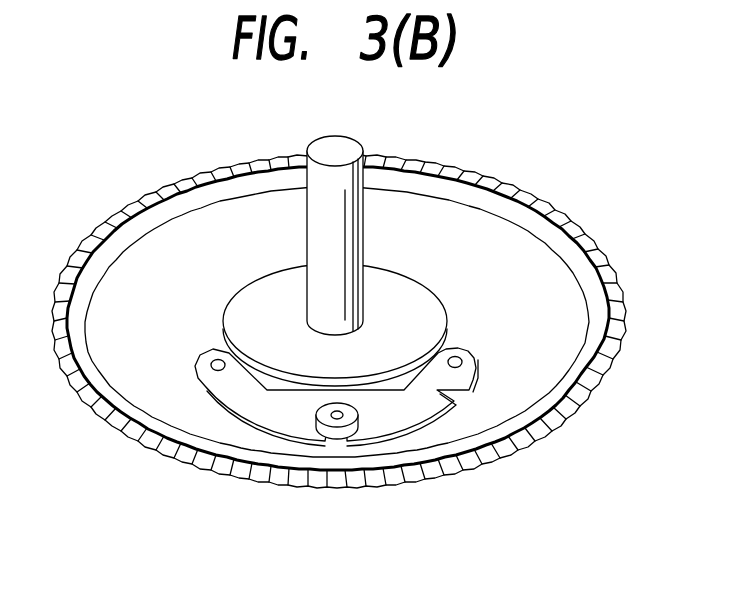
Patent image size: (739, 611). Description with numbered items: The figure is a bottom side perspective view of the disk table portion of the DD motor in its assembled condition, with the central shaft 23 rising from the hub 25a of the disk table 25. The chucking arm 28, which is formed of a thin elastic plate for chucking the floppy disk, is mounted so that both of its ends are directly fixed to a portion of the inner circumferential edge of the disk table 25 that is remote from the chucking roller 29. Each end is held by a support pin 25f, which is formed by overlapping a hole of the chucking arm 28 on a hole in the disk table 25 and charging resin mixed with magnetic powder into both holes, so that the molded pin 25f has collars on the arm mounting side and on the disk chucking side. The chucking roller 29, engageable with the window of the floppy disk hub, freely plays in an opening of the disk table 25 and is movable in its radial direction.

The shaft 23 is at (353, 208).
The disk table 25 is at (433, 215).
The hub portion of turntable 25a is at (286, 280).
The support pin 25f is at (216, 357).
The chucking arm 28 is at (380, 414).
The chucking roller 29 is at (317, 408).